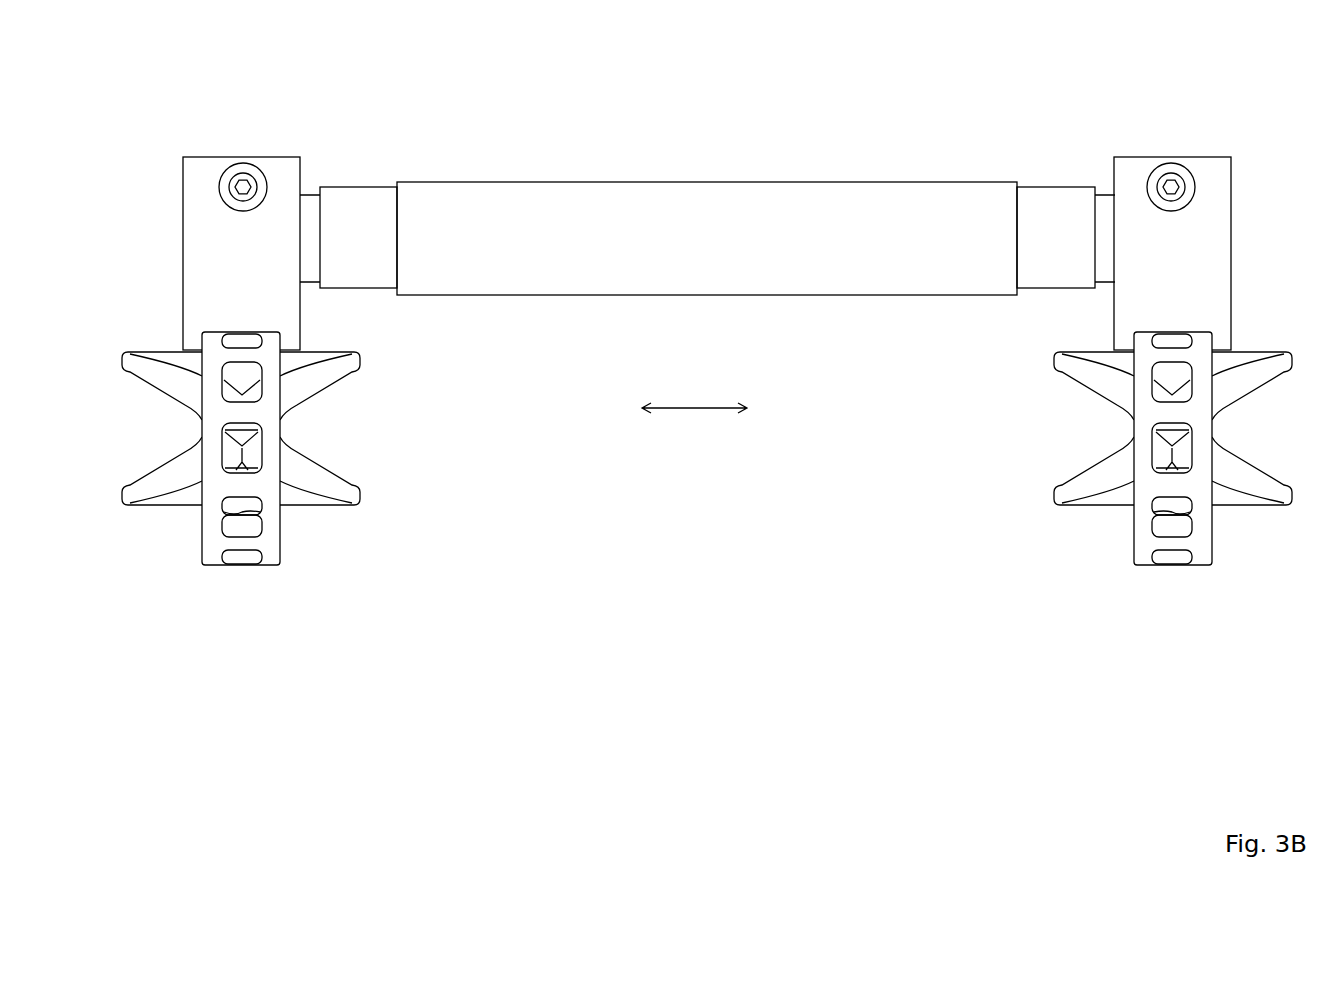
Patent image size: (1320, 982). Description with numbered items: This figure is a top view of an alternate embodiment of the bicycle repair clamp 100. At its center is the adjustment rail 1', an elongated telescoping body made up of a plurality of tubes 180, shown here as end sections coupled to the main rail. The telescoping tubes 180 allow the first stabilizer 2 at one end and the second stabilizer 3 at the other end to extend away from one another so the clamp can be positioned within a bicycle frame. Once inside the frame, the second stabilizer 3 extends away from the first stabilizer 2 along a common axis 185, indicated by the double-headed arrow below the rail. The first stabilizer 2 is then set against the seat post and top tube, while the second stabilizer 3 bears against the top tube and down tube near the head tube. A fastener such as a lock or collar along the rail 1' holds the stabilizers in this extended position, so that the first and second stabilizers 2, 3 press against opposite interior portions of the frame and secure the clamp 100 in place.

The clamp 100 is at (222, 118).
The adjustment rail 1' is at (707, 185).
The tubes 180 is at (370, 207).
The common axis 185 is at (695, 408).
The first stabilizer 2 is at (233, 592).
The second stabilizer 3 is at (1182, 587).